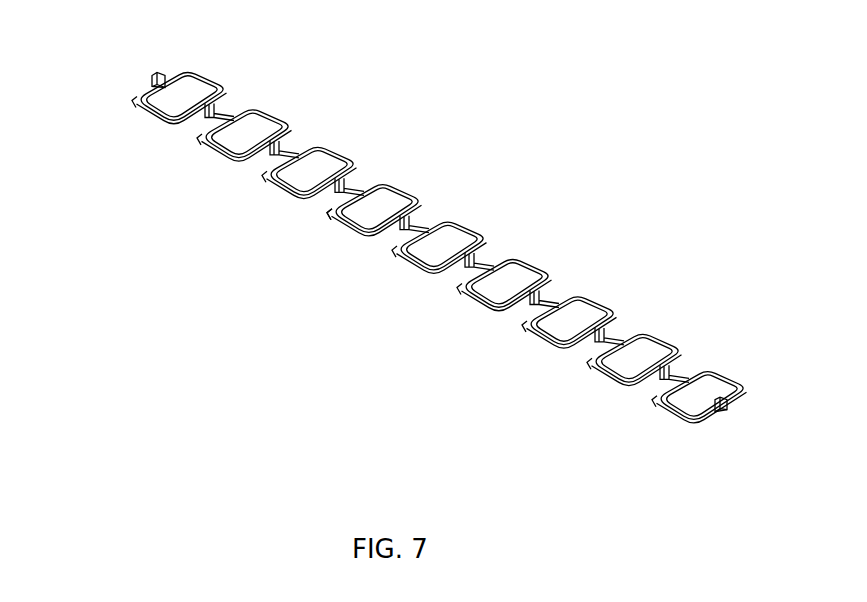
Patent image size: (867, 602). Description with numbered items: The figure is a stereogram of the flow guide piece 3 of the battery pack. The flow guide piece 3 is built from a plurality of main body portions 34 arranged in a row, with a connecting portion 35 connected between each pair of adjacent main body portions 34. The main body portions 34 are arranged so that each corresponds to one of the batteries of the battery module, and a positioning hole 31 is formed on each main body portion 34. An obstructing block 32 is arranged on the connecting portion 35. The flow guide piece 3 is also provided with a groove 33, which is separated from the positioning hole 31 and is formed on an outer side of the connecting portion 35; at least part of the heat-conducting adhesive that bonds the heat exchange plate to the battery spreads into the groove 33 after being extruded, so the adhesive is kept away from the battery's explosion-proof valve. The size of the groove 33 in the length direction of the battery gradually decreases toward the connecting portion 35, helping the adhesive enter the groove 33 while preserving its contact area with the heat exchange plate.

The flow guide piece 3 is at (123, 42).
The positioning hole 31 is at (200, 136).
The obstructing block 32 is at (287, 124).
The groove 33 is at (213, 150).
The main body portion 34 is at (137, 112).
The connecting portion 35 is at (242, 157).